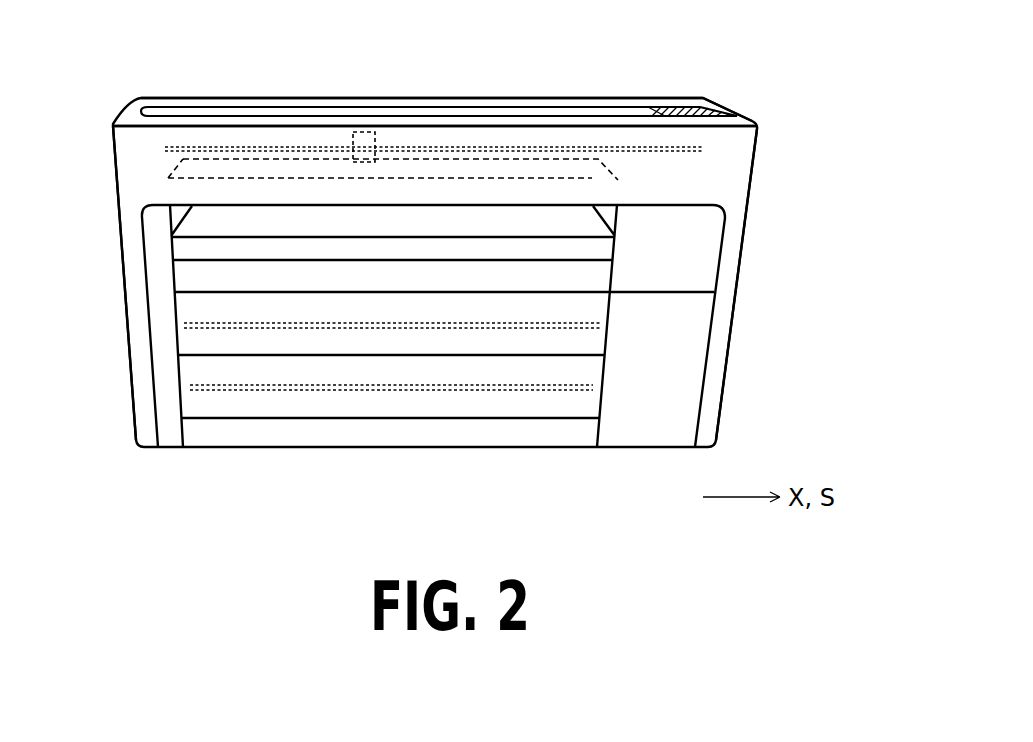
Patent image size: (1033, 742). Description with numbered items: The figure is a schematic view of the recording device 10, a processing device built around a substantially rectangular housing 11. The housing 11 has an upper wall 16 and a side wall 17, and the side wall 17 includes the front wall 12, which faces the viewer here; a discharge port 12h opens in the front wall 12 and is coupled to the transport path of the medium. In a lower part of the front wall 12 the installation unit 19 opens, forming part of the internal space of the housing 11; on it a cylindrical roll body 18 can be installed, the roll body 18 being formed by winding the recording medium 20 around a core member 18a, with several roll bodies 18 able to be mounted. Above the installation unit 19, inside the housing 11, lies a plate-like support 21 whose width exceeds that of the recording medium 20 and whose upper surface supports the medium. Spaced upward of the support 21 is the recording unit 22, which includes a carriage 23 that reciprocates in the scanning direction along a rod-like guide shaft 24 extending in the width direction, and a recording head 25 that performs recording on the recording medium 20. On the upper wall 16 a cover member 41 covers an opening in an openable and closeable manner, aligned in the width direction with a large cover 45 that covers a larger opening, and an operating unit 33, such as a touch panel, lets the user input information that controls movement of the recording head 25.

The recording device 10 is at (743, 62).
The housing 11 is at (745, 118).
The front wall 12 is at (150, 143).
The discharge port 12h is at (214, 216).
The upper wall 16 is at (490, 98).
The side wall 17 is at (751, 210).
The roll body 18 is at (537, 358).
The core member 18a is at (366, 386).
The installation unit 19 is at (182, 368).
The recording medium 20 is at (413, 343).
The support 21 is at (596, 180).
The recording unit 22 is at (333, 138).
The carriage 23 is at (367, 131).
The guide shaft 24 is at (700, 153).
The recording head 25 is at (367, 163).
The operating unit 33 is at (706, 100).
The cover member 41 is at (668, 108).
The large cover 45 is at (589, 108).